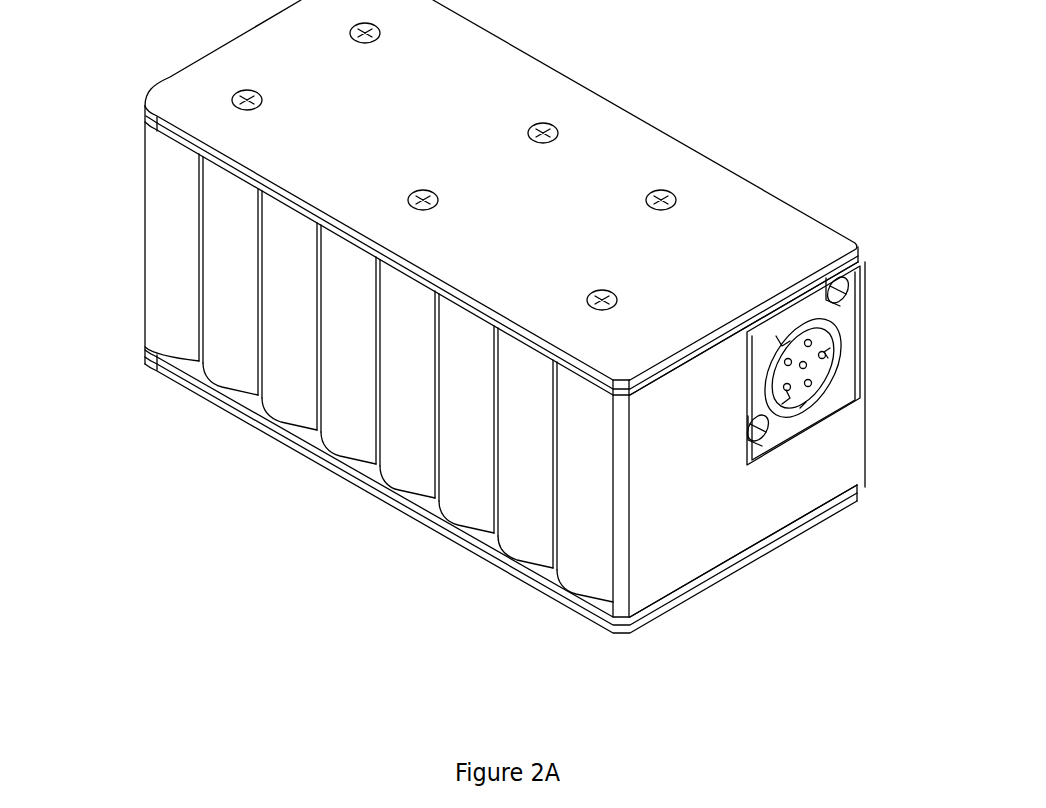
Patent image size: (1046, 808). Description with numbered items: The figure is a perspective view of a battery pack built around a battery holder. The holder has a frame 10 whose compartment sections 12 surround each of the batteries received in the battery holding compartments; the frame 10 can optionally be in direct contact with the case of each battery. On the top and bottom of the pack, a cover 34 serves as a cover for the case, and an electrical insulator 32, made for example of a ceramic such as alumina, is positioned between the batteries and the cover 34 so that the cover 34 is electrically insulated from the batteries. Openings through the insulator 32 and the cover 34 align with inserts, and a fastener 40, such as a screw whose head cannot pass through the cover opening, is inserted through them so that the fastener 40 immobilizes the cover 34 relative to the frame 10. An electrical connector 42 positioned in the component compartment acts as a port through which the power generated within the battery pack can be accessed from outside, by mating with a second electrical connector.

The frame 10 is at (132, 98).
The compartment sections 12 is at (397, 535).
The electrical insulator 32 is at (657, 383).
The cover 34 is at (755, 202).
The fastener 40 is at (380, 33).
The electrical connector 42 is at (806, 440).